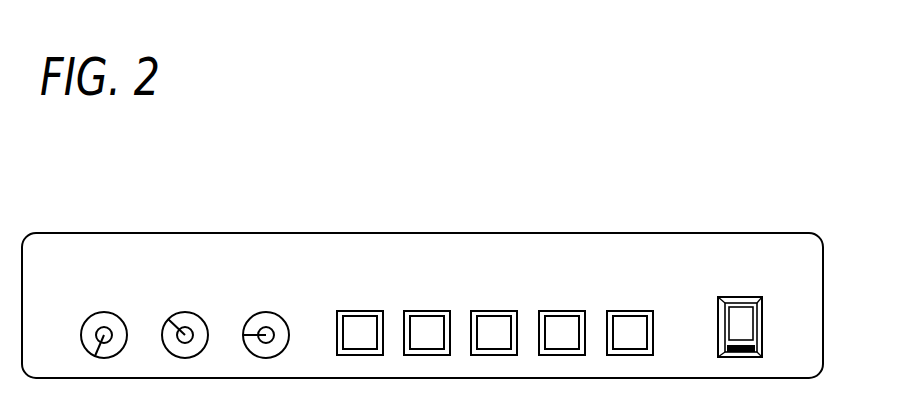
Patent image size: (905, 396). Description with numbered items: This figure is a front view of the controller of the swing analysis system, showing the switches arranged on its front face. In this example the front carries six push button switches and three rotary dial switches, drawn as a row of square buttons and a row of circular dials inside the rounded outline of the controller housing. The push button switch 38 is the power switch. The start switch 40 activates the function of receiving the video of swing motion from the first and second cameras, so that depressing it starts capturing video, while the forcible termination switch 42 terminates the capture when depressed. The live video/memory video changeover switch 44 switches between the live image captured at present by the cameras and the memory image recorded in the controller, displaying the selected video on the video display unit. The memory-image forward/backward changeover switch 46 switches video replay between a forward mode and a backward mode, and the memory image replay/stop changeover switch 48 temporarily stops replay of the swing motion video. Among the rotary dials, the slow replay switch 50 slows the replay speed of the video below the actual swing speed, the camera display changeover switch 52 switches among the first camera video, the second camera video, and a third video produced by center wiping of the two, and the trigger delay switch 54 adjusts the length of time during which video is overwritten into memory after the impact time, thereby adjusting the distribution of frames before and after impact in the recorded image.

The power switch 38 is at (739, 315).
The start switch 40 is at (629, 323).
The forcible termination switch 42 is at (561, 323).
The live video/memory video changeover switch 44 is at (493, 323).
The memory-image forward/backward changeover switch 46 is at (426, 323).
The memory image replay/stop changeover switch 48 is at (359, 323).
The slow replay switch 50 is at (264, 314).
The camera display changeover switch 52 is at (183, 314).
The trigger delay switch 54 is at (102, 314).